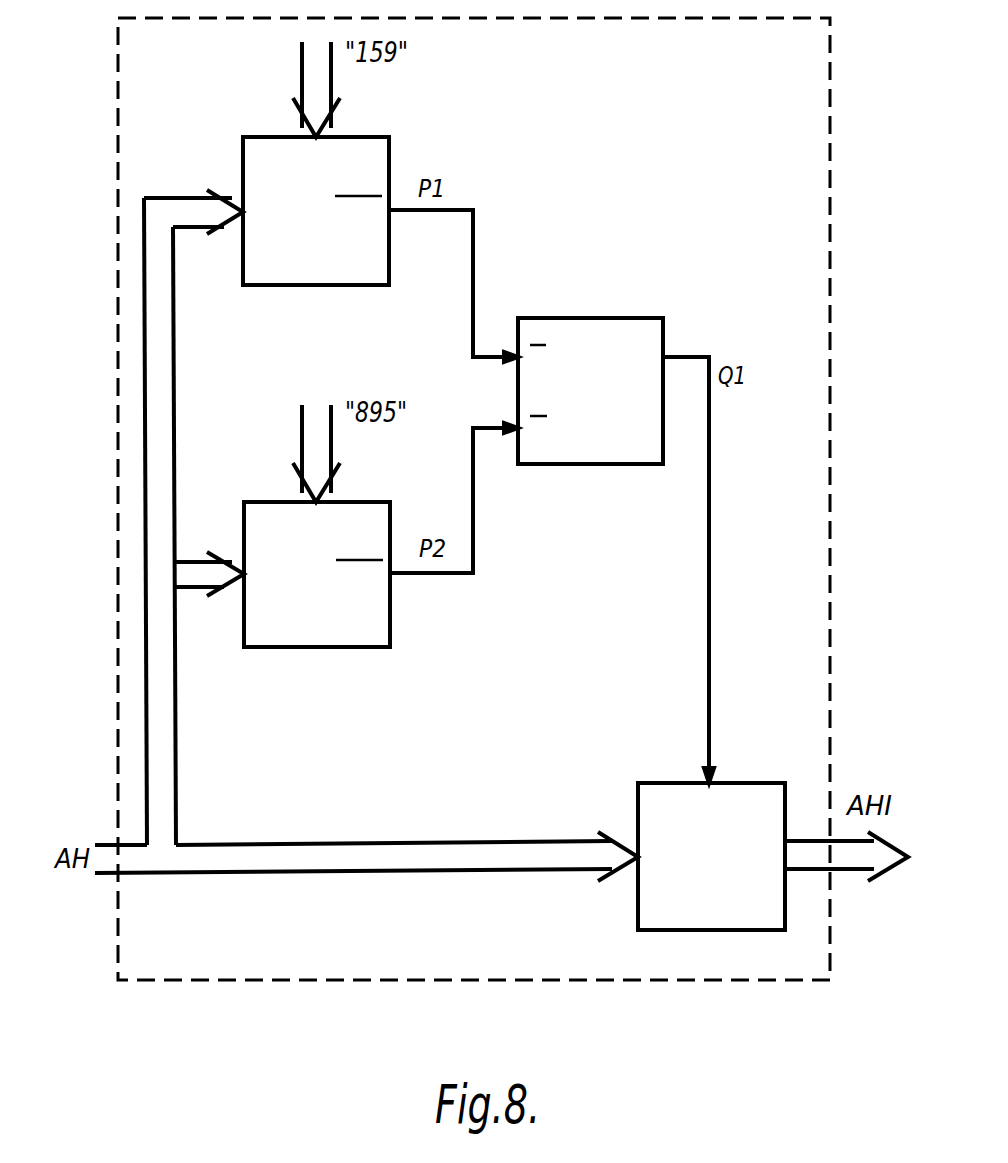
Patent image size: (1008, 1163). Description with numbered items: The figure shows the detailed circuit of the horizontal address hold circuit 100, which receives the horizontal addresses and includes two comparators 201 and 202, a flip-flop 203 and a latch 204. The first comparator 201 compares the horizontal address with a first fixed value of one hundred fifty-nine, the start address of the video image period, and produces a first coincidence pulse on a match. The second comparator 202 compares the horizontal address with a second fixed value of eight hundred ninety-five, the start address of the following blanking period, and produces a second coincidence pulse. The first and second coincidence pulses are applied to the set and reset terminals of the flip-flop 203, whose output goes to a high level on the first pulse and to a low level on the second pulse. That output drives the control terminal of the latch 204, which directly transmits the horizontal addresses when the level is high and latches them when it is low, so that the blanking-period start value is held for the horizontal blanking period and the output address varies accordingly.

The horizontal address hold circuit 100 is at (830, 492).
The first comparator 201 is at (326, 285).
The second comparator 202 is at (327, 647).
The flip-flop 203 is at (598, 464).
The latch 204 is at (713, 930).